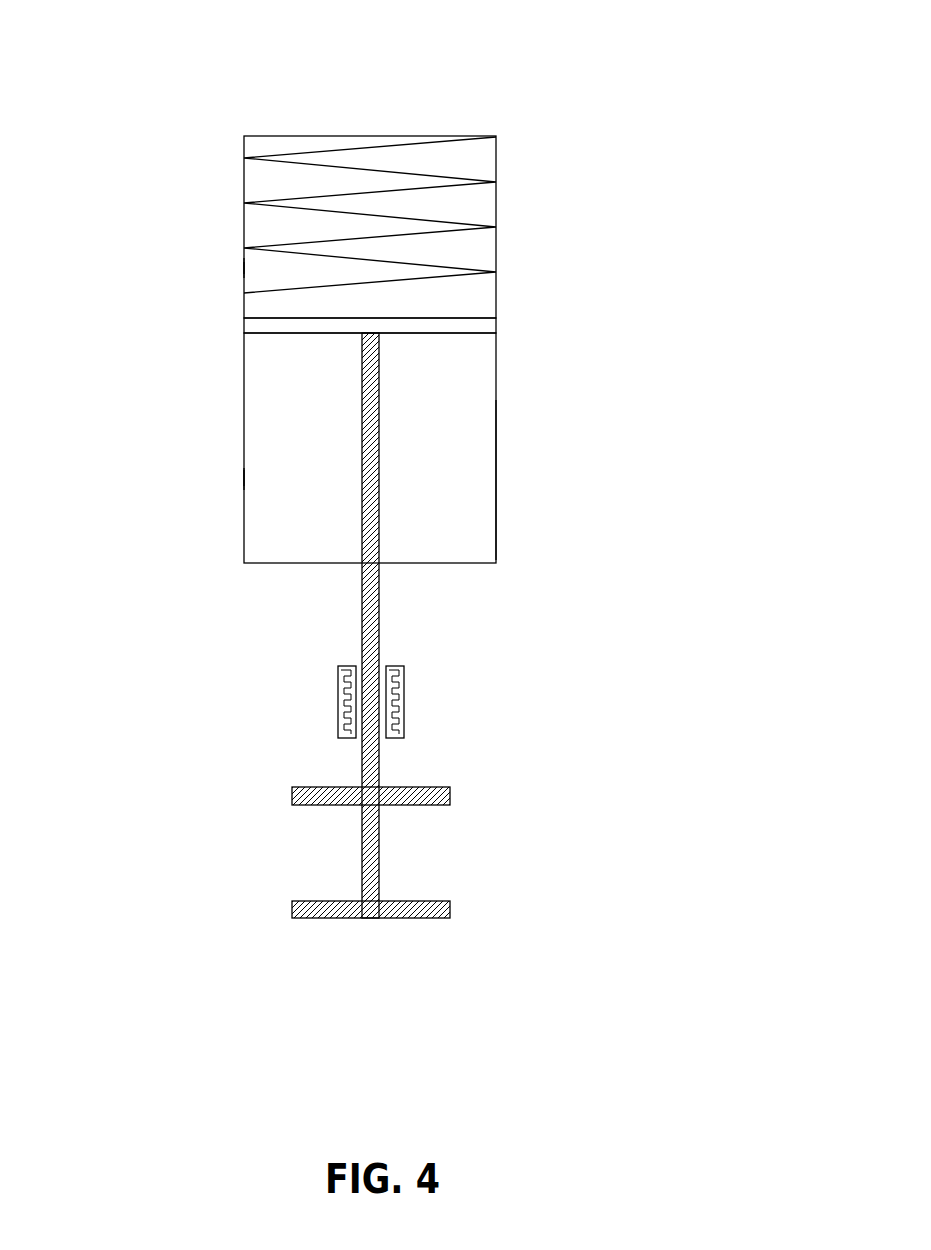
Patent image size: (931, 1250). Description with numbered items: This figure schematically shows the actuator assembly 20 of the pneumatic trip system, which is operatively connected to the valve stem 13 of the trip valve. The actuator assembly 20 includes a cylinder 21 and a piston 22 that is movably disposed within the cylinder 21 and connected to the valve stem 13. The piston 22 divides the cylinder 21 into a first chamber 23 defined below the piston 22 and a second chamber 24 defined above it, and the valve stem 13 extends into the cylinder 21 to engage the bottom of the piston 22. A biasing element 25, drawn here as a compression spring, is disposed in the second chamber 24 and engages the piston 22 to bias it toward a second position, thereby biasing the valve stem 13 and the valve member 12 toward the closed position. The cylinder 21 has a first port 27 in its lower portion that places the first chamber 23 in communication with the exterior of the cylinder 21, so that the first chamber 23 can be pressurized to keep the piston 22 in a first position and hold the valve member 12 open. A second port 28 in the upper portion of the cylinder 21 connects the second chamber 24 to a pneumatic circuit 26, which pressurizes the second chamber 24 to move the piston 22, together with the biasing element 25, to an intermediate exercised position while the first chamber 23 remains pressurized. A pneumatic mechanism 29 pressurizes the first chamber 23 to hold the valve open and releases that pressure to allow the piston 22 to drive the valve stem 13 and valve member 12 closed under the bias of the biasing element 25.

The actuator assembly 20 is at (260, 85).
The biasing element 25 is at (390, 172).
The second chamber 24 is at (475, 165).
The second port 28 is at (244, 267).
The pneumatic circuit 26 is at (244, 268).
The piston 22 is at (473, 318).
The cylinder 21 is at (497, 428).
The first chamber 23 is at (475, 485).
The pneumatic mechanism 29 is at (244, 475).
The first port 27 is at (243, 478).
The valve stem 13 is at (370, 630).
The valve member 12 is at (450, 912).